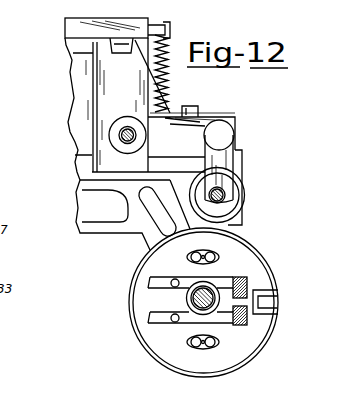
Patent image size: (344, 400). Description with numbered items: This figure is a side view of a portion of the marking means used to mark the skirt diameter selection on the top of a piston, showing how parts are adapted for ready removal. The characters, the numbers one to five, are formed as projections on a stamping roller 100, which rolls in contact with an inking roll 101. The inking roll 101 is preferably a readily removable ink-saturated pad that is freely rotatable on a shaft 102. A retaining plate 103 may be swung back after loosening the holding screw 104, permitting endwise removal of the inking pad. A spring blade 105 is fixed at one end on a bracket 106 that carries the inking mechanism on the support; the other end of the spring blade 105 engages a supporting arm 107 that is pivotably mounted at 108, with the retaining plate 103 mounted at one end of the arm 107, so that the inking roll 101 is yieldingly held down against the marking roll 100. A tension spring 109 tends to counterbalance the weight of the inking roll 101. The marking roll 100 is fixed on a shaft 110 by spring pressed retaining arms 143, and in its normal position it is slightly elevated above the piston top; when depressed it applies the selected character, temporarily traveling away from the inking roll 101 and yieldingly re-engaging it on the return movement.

The stamping roller 100 is at (305, 266).
The inking roll 101 is at (250, 200).
The shaft 102 is at (225, 195).
The retaining plate 103 is at (228, 167).
The holding screw 104 is at (225, 137).
The spring blade 105 is at (173, 110).
The bracket 106 is at (92, 32).
The supporting arm 107 is at (198, 130).
The pivot 108 is at (127, 134).
The tension spring 109 is at (165, 48).
The shaft 110 is at (207, 288).
The spring pressed retaining arms 143 is at (150, 322).